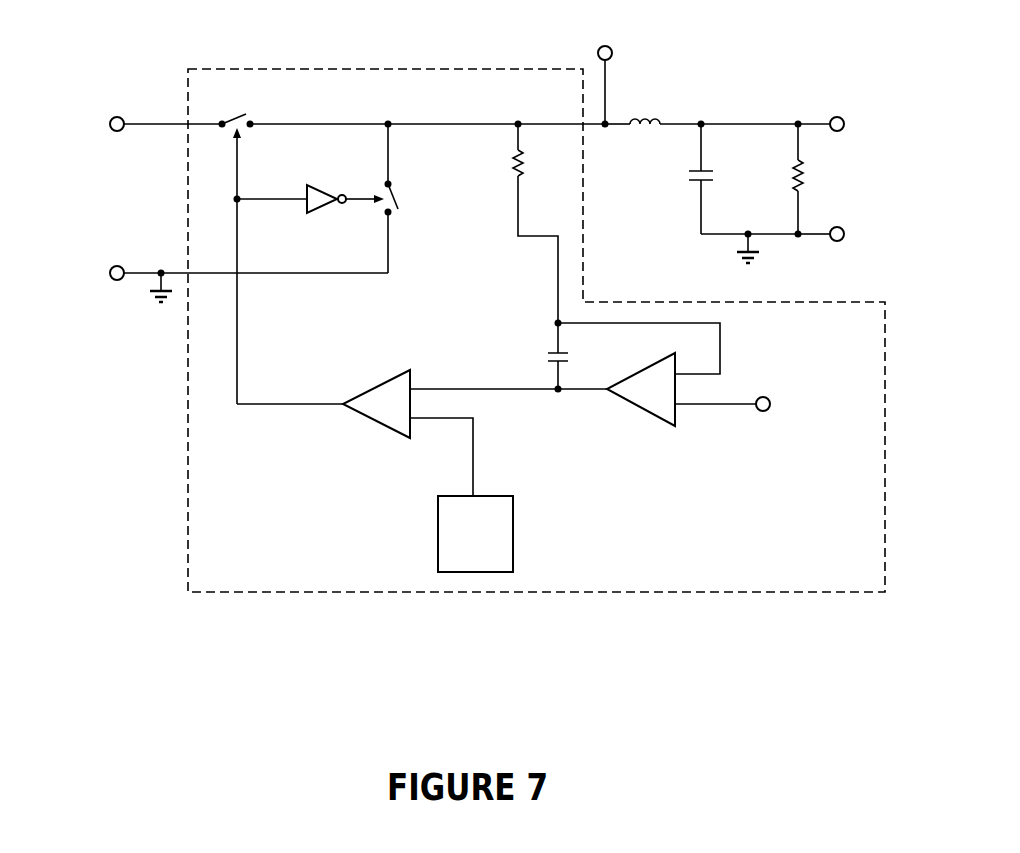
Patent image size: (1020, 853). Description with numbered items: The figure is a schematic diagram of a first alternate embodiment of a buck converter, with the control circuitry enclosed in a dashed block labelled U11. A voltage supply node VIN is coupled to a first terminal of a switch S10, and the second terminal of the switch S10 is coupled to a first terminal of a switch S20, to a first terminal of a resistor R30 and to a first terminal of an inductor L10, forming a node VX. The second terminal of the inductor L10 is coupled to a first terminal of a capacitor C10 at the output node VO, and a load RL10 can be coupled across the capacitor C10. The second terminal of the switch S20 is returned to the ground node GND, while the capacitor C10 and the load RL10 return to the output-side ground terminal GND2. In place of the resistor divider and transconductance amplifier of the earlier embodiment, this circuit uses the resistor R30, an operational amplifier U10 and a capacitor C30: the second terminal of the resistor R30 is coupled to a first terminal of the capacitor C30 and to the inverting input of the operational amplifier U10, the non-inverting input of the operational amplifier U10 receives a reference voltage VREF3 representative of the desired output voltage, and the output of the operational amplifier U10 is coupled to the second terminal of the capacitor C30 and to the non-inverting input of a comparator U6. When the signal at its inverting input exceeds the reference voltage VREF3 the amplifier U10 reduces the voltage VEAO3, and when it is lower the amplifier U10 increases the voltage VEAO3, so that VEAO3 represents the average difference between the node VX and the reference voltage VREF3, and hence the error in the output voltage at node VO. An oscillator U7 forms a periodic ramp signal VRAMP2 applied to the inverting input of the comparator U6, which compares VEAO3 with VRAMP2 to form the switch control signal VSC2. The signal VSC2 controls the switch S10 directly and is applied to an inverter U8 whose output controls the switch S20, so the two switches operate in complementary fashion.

The switching regulator control circuit (dashed block) U11 is at (417, 67).
The voltage supply node VIN is at (142, 123).
The switch S10 is at (409, 246).
The inverter U8 is at (309, 189).
The switch S20 is at (413, 197).
The ground node GND is at (215, 283).
The output ground terminal GND2 is at (859, 238).
The resistor R30 is at (511, 222).
The node VX is at (605, 70).
The inductor L10 is at (653, 105).
The capacitor C10 is at (743, 192).
The load RL10 is at (790, 179).
The output voltage node VO is at (862, 128).
The comparator U6 is at (376, 393).
The switch control signal VSC2 is at (290, 398).
The voltage VEAO3 is at (508, 377).
The periodic ramp signal VRAMP2 is at (465, 445).
The capacitor C30 is at (534, 355).
The operational amplifier U10 is at (639, 374).
The reference voltage VREF3 is at (765, 406).
The oscillator U7 is at (454, 534).